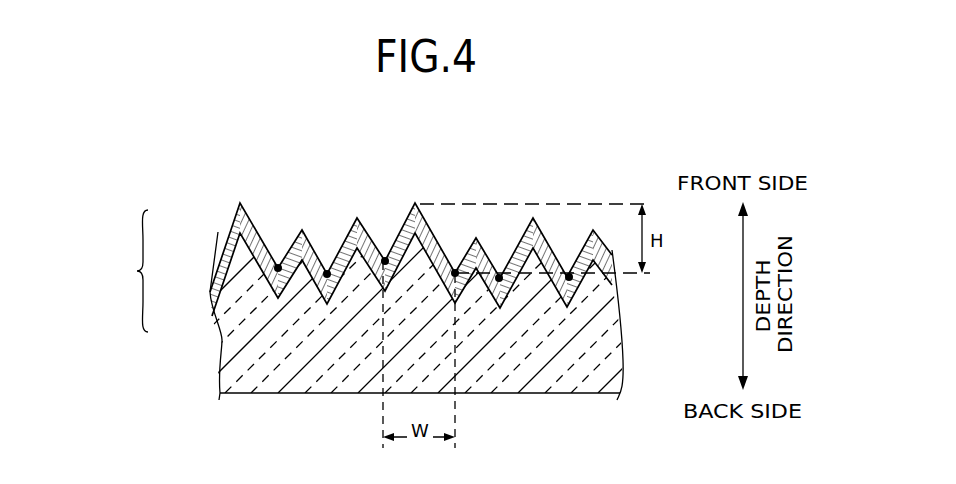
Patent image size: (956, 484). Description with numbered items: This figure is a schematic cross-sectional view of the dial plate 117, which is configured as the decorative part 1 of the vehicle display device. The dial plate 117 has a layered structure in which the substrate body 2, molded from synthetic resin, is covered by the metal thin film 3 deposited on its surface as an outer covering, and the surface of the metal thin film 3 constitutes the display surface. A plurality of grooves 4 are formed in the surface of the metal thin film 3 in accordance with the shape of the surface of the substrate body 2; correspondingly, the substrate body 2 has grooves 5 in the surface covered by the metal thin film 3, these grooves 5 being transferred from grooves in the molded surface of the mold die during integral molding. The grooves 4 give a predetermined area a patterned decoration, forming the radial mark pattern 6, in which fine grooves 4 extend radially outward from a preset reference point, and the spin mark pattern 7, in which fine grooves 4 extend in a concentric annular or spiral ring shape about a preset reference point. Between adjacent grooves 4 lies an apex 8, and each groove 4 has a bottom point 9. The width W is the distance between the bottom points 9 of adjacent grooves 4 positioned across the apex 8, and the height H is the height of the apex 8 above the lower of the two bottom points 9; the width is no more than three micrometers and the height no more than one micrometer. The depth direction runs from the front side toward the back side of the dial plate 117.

The dial plate 117 is at (104, 271).
The decorative part 1 is at (104, 271).
The substrate body 2 is at (224, 338).
The metal thin film 3 is at (238, 205).
The grooves 4 is at (337, 393).
The grooves 5 is at (337, 393).
The radial mark pattern 6 is at (365, 120).
The spin mark pattern 7 is at (388, 150).
The apex 8 is at (241, 203).
The bottom points 9 is at (326, 270).